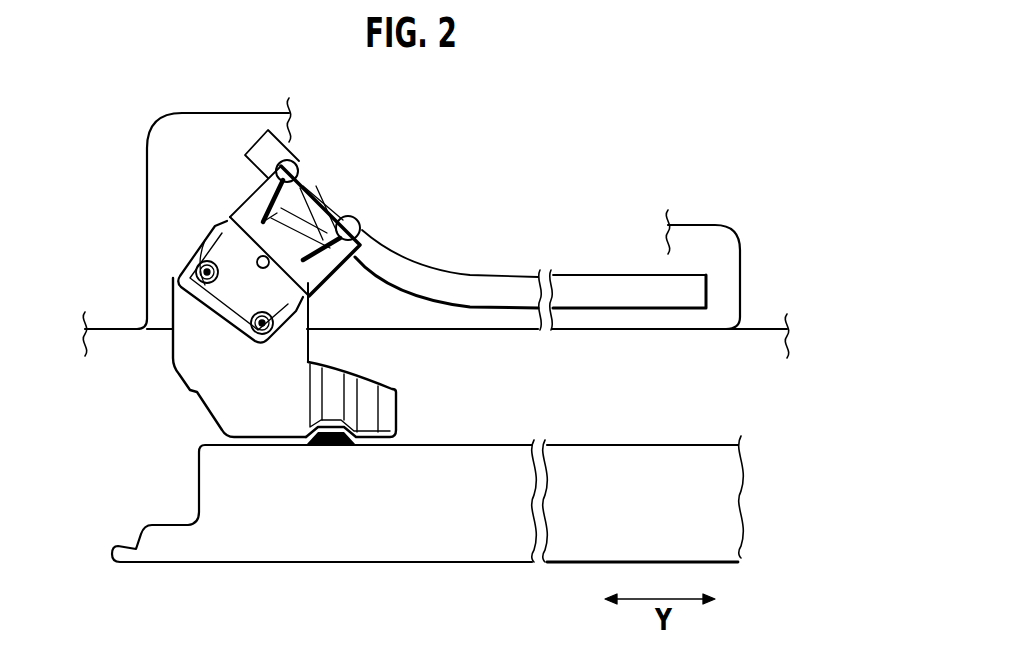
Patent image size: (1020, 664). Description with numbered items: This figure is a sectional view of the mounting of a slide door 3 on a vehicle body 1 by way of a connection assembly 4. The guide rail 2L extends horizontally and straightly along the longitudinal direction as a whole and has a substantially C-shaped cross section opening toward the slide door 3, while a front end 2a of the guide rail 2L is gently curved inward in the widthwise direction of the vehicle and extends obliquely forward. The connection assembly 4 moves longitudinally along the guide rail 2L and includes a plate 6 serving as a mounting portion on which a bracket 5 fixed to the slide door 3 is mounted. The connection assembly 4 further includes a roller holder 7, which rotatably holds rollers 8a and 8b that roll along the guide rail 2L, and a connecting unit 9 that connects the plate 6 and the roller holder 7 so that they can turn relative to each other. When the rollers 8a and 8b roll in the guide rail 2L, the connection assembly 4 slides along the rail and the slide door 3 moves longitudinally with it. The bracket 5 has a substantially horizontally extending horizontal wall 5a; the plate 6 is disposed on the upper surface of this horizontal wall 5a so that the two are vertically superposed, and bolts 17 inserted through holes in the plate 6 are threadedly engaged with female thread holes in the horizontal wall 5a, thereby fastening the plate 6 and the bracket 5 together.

The vehicle body 1 is at (713, 333).
The front end 2a is at (400, 256).
The guide rail 2L is at (596, 272).
The slide door 3 is at (616, 457).
The connection assembly 4 is at (193, 168).
The bracket 5 is at (400, 400).
The horizontal wall 5a is at (176, 351).
The plate 6 is at (212, 250).
The roller holder 7 is at (250, 200).
The roller 8a is at (310, 190).
The roller 8b is at (292, 162).
The connecting unit 9 is at (255, 255).
The bolt 17 is at (247, 343).